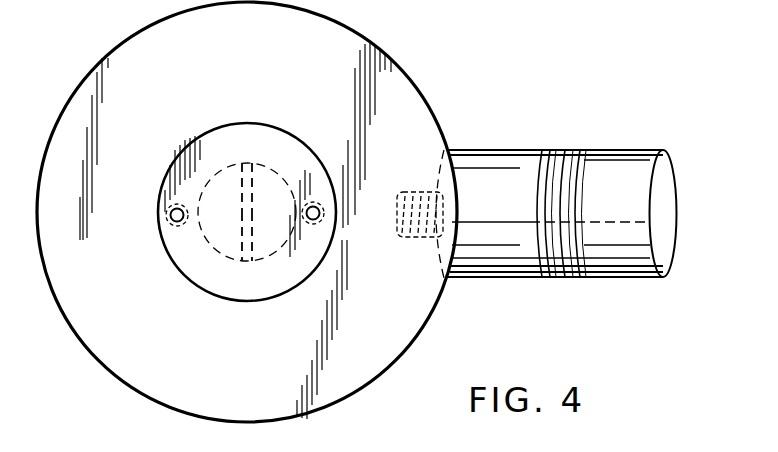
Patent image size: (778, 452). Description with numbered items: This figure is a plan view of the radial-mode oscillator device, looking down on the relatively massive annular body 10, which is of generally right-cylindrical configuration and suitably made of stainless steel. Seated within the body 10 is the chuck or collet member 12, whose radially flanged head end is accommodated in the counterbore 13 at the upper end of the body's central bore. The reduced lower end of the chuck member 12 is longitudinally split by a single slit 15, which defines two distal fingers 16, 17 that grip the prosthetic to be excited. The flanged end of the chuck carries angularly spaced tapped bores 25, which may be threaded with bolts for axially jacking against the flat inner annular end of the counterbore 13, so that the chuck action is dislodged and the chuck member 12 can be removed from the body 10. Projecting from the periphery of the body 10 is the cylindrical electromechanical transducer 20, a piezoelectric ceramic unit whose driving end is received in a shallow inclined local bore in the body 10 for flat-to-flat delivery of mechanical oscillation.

The annular body 10 is at (418, 115).
The chuck or collet member 12 is at (262, 278).
The counterbore 13 is at (309, 449).
The slit 15 is at (234, 256).
The distal finger 16 is at (232, 168).
The distal finger 17 is at (287, 183).
The electromechanical transducer 20 is at (483, 281).
The tapped bores 25 is at (315, 201).